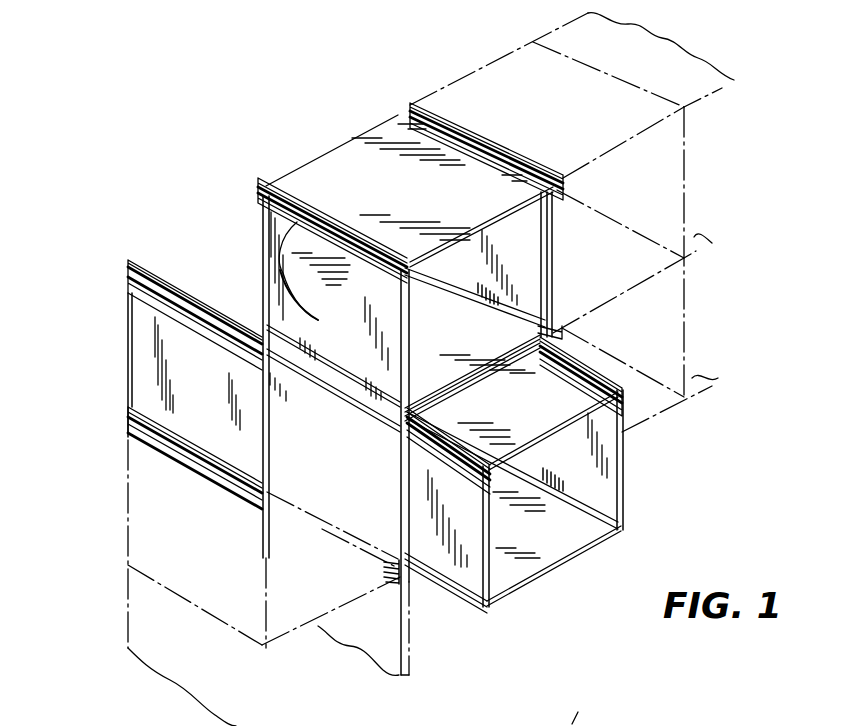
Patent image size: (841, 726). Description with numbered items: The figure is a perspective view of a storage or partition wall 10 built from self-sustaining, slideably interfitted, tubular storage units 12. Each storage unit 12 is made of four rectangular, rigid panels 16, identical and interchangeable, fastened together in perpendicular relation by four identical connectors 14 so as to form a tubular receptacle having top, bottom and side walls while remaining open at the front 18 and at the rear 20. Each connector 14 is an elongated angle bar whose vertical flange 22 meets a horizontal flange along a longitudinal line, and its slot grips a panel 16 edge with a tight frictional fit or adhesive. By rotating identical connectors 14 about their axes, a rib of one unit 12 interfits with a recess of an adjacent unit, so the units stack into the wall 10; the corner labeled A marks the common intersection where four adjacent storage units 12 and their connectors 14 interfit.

The storage or partition wall 10 is at (373, 116).
The tubular storage unit 12 is at (691, 172).
The connector 14 is at (449, 598).
The panel 16 is at (532, 422).
The front opening 18 is at (588, 452).
The rear opening 20 is at (232, 258).
The vertical flange 22 is at (589, 714).
The corner A is at (386, 564).